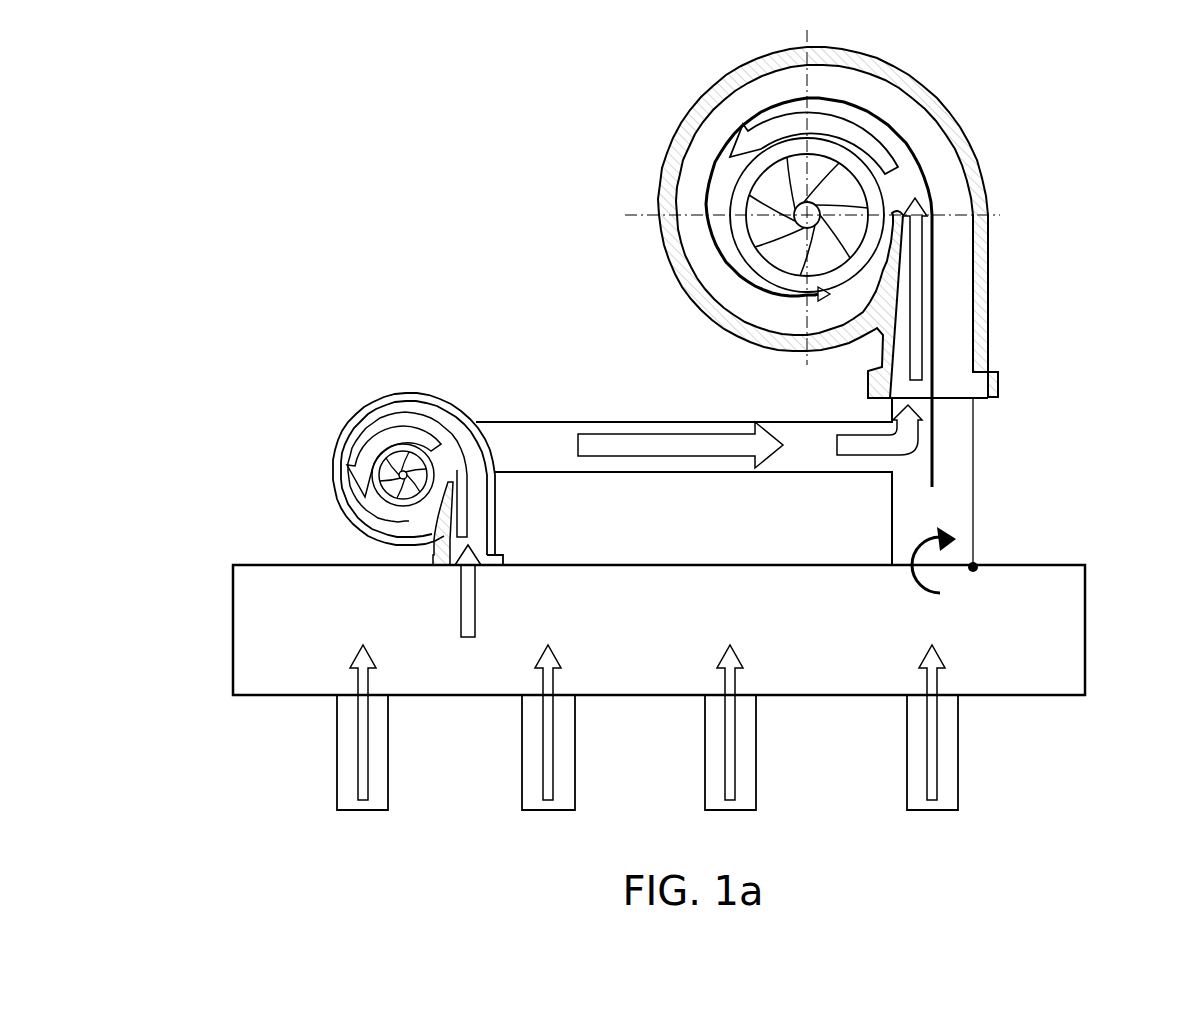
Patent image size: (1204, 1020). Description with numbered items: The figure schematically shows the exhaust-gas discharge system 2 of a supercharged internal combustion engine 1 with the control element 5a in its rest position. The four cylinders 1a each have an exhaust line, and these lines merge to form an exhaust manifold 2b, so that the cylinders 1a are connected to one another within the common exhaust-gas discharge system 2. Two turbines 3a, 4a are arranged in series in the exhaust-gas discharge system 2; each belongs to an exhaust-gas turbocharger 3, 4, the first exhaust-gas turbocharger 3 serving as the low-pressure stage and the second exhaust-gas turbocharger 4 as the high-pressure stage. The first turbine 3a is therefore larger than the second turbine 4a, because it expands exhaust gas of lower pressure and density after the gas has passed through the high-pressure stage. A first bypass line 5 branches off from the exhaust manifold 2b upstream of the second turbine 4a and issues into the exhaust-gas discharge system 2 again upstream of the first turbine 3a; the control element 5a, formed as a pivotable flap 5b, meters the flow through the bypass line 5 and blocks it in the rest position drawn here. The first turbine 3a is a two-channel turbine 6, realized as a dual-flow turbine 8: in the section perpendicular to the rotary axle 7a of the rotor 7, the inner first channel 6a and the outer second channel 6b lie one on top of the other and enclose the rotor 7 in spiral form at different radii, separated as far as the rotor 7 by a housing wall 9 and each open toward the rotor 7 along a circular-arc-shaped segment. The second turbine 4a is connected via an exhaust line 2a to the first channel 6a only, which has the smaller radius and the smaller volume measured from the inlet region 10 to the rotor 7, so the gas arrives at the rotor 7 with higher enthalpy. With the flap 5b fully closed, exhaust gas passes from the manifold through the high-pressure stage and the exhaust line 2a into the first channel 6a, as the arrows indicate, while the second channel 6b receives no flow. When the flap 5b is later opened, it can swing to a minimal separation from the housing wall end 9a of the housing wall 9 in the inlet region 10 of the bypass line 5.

The internal combustion engine 1 is at (180, 625).
The cylinders 1a is at (351, 839).
The exhaust-gas discharge system 2 is at (392, 242).
The exhaust line 2a is at (533, 433).
The exhaust manifold 2b is at (643, 643).
The first exhaust-gas turbocharger 3 is at (913, 298).
The first turbine 3a is at (913, 298).
The second exhaust-gas turbocharger 4 is at (345, 464).
The second turbine 4a is at (283, 403).
The first bypass line 5 is at (898, 530).
The control element 5a is at (983, 534).
The pivotable flap 5b is at (951, 562).
The two-channel turbine 6 is at (913, 298).
The first channel 6a is at (895, 378).
The second channel 6b is at (958, 322).
The rotor 7 is at (790, 185).
The rotary axle 7a is at (757, 277).
The dual-flow turbine 8 is at (913, 298).
The housing wall 9 is at (937, 307).
The housing wall end 9a is at (937, 481).
The inlet region 10 is at (1052, 421).